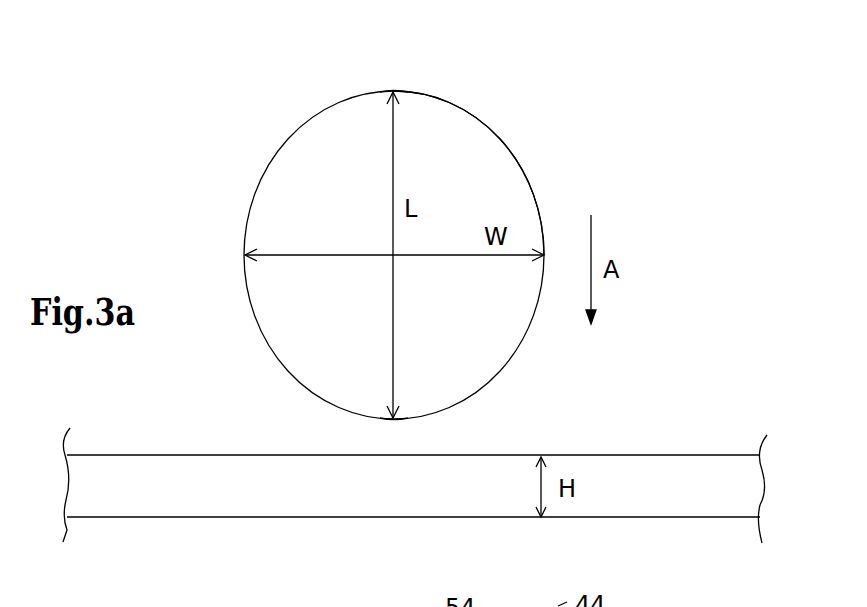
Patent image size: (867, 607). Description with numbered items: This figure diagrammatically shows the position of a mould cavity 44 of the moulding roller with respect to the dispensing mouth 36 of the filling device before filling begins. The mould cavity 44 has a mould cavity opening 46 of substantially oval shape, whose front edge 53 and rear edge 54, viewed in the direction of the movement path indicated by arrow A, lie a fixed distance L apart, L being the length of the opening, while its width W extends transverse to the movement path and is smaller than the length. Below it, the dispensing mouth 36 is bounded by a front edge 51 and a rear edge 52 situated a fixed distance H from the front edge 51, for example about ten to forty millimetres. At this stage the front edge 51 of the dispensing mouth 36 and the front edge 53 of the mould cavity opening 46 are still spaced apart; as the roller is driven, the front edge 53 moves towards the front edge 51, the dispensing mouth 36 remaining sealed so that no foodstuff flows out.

The dispensing mouth 36 is at (432, 488).
The mould cavity 44 is at (482, 102).
The mould cavity opening 46 is at (513, 152).
The front edge 51 is at (621, 456).
The rear edge 52 is at (629, 518).
The front edge 53 is at (383, 420).
The rear edge 54 is at (398, 91).